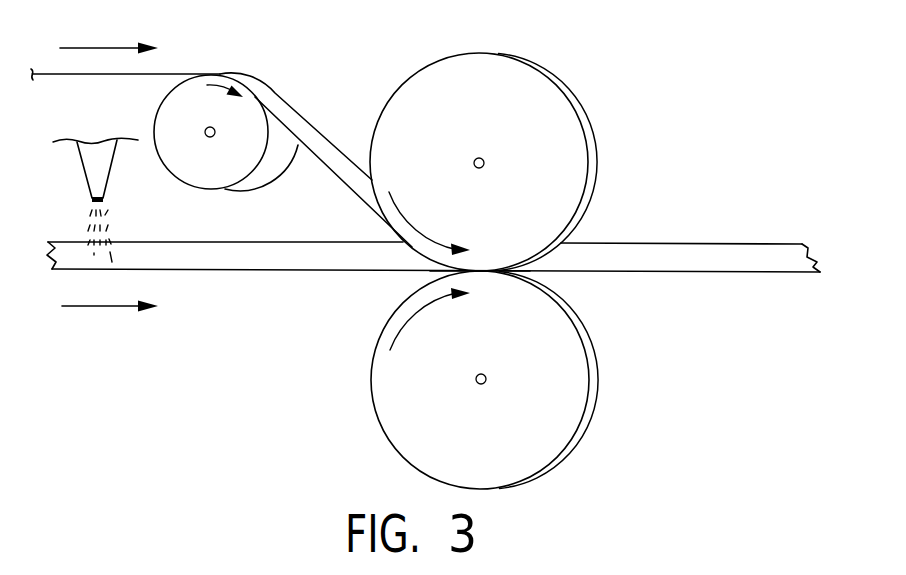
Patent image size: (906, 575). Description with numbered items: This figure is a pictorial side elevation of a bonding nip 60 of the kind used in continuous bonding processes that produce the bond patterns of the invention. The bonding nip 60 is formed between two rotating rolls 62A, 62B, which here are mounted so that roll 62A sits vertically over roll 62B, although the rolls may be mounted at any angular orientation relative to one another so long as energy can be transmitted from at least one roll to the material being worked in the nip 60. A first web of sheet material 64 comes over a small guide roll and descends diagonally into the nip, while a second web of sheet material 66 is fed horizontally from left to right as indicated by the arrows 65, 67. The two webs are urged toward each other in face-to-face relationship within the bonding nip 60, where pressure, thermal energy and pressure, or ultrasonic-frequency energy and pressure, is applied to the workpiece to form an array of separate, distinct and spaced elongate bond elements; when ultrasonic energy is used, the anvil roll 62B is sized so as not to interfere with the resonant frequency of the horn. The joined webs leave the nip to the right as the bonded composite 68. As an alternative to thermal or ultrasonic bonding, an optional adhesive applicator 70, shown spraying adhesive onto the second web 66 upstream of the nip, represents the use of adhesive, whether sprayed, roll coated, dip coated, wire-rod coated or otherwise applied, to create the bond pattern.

The bonding nip 60 is at (503, 272).
The roll 62A is at (558, 117).
The roll 62B is at (573, 410).
The first web of sheet material 64 is at (308, 131).
The film feed direction 65 is at (90, 47).
The second web of sheet material 66 is at (197, 262).
The arrow 67 is at (98, 308).
The bonded composite 68 is at (730, 250).
The adhesive applicator 70 is at (95, 175).